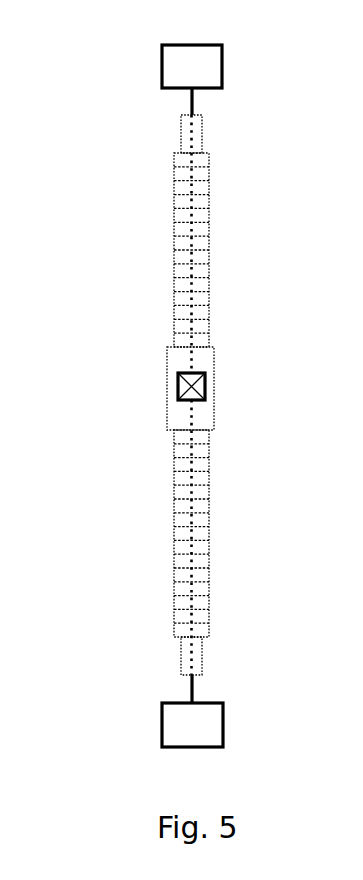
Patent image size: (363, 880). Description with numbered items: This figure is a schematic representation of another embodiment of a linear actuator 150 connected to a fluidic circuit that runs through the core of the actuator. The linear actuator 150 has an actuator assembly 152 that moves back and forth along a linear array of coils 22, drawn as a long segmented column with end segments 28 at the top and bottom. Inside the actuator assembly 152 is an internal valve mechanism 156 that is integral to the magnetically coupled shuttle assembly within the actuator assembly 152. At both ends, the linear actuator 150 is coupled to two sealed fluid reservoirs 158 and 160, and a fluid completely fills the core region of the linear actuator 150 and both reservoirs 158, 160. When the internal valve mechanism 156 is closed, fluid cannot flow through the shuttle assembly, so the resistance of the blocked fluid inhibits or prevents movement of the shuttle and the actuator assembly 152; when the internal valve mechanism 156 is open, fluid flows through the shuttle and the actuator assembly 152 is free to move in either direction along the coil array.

The linear actuator 150 is at (150, 567).
The fluid reservoir 160 is at (222, 66).
The end segment 28 is at (201, 133).
The coils 22 is at (196, 200).
The actuator assembly 152 is at (214, 347).
The internal valve mechanism 156 is at (204, 392).
The fluid reservoir 158 is at (223, 720).